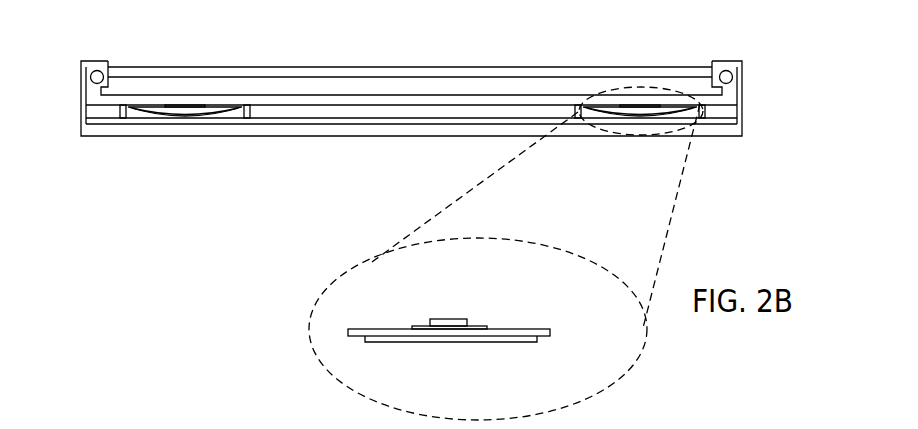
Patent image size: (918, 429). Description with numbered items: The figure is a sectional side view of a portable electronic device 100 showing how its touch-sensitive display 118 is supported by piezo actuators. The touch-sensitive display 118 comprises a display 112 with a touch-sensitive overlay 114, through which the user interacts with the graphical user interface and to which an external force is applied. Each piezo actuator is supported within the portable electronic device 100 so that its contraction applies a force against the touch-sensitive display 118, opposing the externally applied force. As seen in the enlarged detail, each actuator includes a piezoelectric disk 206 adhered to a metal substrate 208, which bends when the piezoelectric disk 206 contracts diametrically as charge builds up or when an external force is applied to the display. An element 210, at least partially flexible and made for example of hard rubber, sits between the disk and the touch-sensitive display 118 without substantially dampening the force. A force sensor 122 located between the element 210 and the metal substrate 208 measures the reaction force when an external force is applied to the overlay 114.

The portable electronic device 100 is at (560, 33).
The display 112 is at (329, 77).
The touch-sensitive overlay 114 is at (388, 67).
The touch-sensitive display 118 is at (178, 66).
The force sensor 122 is at (476, 327).
The piezoelectric disk 206 is at (507, 343).
The metal substrate 208 is at (538, 329).
The element 210 is at (437, 318).